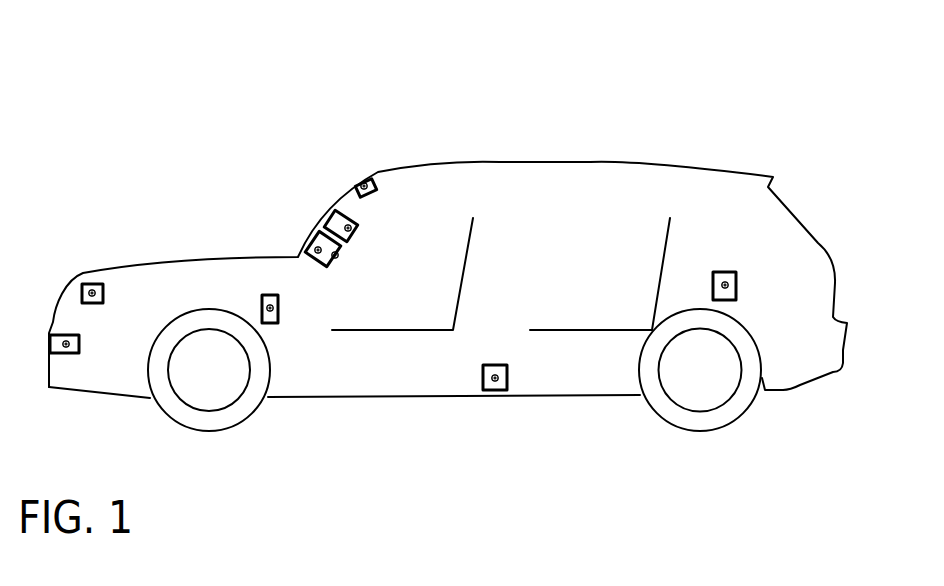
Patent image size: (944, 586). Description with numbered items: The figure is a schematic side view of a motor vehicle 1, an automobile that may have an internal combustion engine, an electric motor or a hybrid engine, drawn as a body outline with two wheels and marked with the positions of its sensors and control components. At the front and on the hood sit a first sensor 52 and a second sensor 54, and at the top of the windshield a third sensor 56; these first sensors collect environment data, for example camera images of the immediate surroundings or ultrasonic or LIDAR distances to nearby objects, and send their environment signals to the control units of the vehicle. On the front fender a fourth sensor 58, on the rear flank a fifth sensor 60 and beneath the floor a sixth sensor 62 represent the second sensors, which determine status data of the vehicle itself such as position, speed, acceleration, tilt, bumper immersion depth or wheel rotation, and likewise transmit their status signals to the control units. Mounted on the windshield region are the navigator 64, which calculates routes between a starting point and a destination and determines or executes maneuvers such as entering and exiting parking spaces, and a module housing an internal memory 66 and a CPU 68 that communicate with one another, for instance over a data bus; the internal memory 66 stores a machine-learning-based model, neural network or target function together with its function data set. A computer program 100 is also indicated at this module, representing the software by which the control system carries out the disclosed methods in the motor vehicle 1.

The motor vehicle 1 is at (192, 105).
The first sensor 52 is at (66, 344).
The second sensor 54 is at (92, 293).
The third sensor 56 is at (363, 183).
The fourth sensor 58 is at (270, 308).
The fifth sensor 60 is at (725, 285).
The sixth sensor 62 is at (495, 378).
The navigator 64 is at (350, 228).
The internal memory 66 is at (299, 208).
The CPU 68 is at (318, 250).
The computer program 100 is at (337, 254).